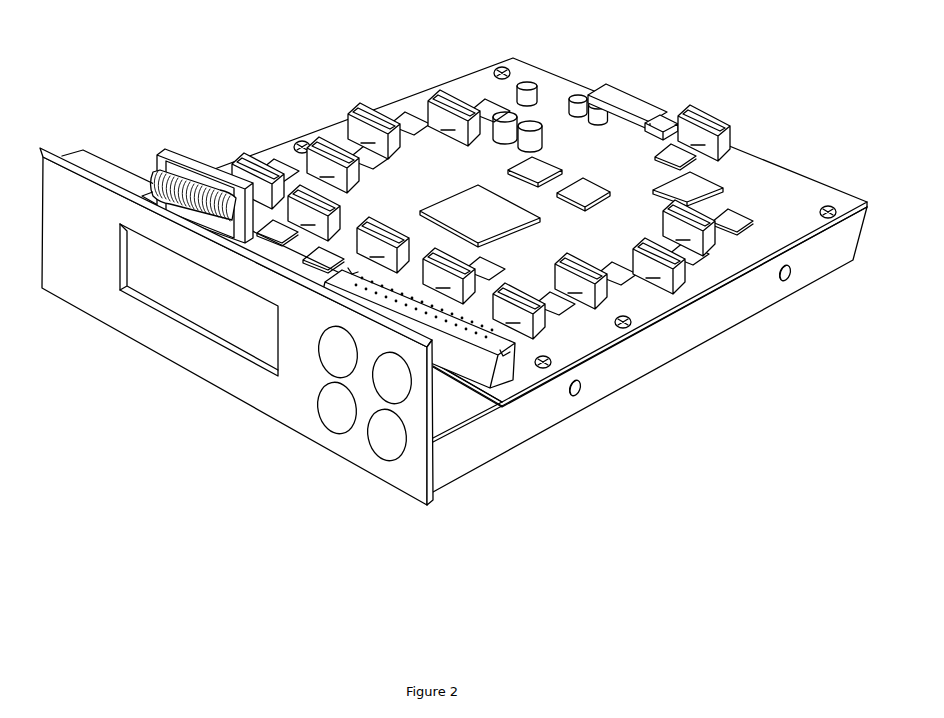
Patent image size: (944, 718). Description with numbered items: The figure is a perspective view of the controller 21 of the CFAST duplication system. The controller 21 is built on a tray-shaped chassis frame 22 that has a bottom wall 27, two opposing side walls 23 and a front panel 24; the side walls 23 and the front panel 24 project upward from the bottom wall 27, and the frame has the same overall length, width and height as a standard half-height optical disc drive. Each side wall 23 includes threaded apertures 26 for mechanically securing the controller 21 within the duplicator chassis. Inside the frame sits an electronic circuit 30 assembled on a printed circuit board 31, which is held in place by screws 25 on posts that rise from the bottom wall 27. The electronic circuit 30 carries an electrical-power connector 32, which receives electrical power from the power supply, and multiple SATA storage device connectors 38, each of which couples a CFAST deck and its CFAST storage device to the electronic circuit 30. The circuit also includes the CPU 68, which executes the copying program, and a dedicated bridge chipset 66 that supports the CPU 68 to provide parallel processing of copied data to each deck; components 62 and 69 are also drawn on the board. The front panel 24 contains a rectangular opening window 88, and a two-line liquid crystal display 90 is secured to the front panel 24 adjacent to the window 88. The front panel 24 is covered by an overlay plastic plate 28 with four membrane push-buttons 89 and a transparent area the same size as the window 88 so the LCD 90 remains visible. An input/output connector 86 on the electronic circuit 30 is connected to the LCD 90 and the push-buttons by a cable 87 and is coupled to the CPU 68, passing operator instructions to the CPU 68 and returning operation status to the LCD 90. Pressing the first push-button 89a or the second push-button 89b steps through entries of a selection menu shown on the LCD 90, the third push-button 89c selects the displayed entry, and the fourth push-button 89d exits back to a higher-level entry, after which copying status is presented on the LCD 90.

The controller 21 is at (130, 398).
The chassis frame 22 is at (711, 318).
The side walls 23 is at (657, 343).
The front panel 24 is at (82, 282).
The screws 25 is at (493, 58).
The threaded apertures 26 is at (578, 396).
The bottom wall 27 is at (450, 406).
The plastic plate 28 is at (66, 234).
The electronic circuit 30 is at (772, 181).
The printed circuit board 31 is at (773, 224).
The electrical-power connector 32 is at (650, 97).
The SATA storage device connectors 38 is at (244, 147).
The integrated circuits 62 is at (567, 160).
The bridge chipset 66 is at (282, 163).
The CPU 68 is at (471, 219).
The memory chip 69 is at (676, 196).
The input/output connector 86 is at (158, 148).
The cable 87 is at (148, 167).
The window 88 is at (191, 323).
The membrane push-buttons 89 is at (335, 435).
The first push-button 89a is at (327, 358).
The second push-button 89b is at (326, 414).
The third push-button 89c is at (381, 384).
The fourth push-button 89d is at (376, 441).
The liquid crystal display 90 is at (139, 279).